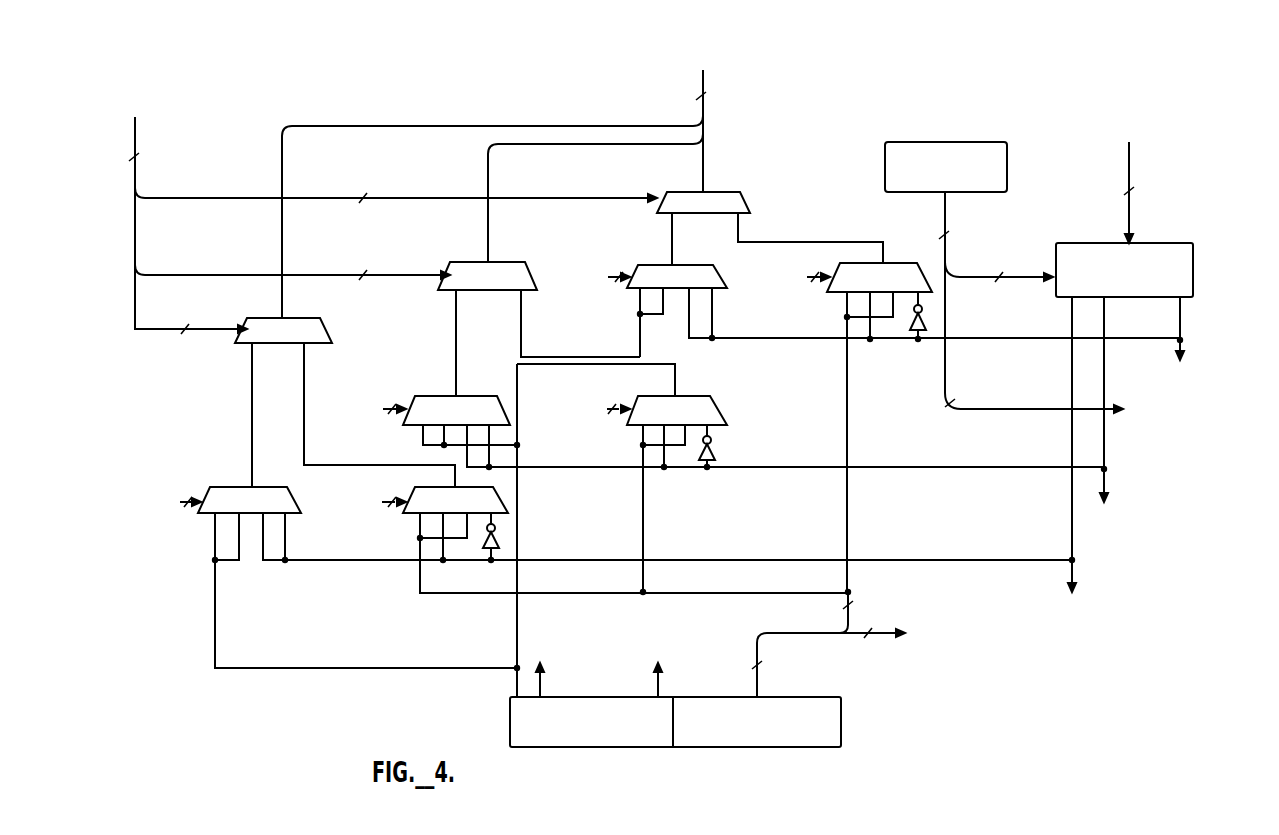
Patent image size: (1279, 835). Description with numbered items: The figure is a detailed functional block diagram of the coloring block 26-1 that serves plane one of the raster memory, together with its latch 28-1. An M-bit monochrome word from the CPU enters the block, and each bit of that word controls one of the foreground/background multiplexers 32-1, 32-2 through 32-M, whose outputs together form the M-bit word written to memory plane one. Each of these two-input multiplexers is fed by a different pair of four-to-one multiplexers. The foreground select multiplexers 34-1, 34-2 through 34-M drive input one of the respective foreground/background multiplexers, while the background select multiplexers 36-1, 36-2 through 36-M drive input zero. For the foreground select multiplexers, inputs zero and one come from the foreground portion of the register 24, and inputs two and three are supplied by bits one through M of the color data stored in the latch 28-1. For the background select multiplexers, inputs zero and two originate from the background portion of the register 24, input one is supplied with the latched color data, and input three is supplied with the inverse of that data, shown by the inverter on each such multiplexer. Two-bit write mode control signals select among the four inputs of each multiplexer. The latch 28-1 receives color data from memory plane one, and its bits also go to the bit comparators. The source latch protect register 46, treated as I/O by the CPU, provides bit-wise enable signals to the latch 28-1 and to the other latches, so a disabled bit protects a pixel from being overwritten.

The coloring block 26-1 is at (355, 86).
The foreground/background multiplexer 32-1 is at (308, 318).
The foreground/background multiplexer 32-2 is at (481, 258).
The foreground/background multiplexer 32-M is at (727, 190).
The four-to-one foreground select multiplexer 34-1 is at (256, 486).
The four-to-one foreground select multiplexer 34-2 is at (465, 396).
The four-to-one foreground select multiplexer 34-M is at (676, 263).
The four-to-one background select multiplexer 36-1 is at (428, 486).
The four-to-one background select multiplexer 36-2 is at (695, 396).
The four-to-one background select multiplexer 36-M is at (890, 262).
The source latch protect register 46 is at (979, 142).
The source latch 28-1 is at (1158, 243).
The foreground/background register 24 is at (675, 752).